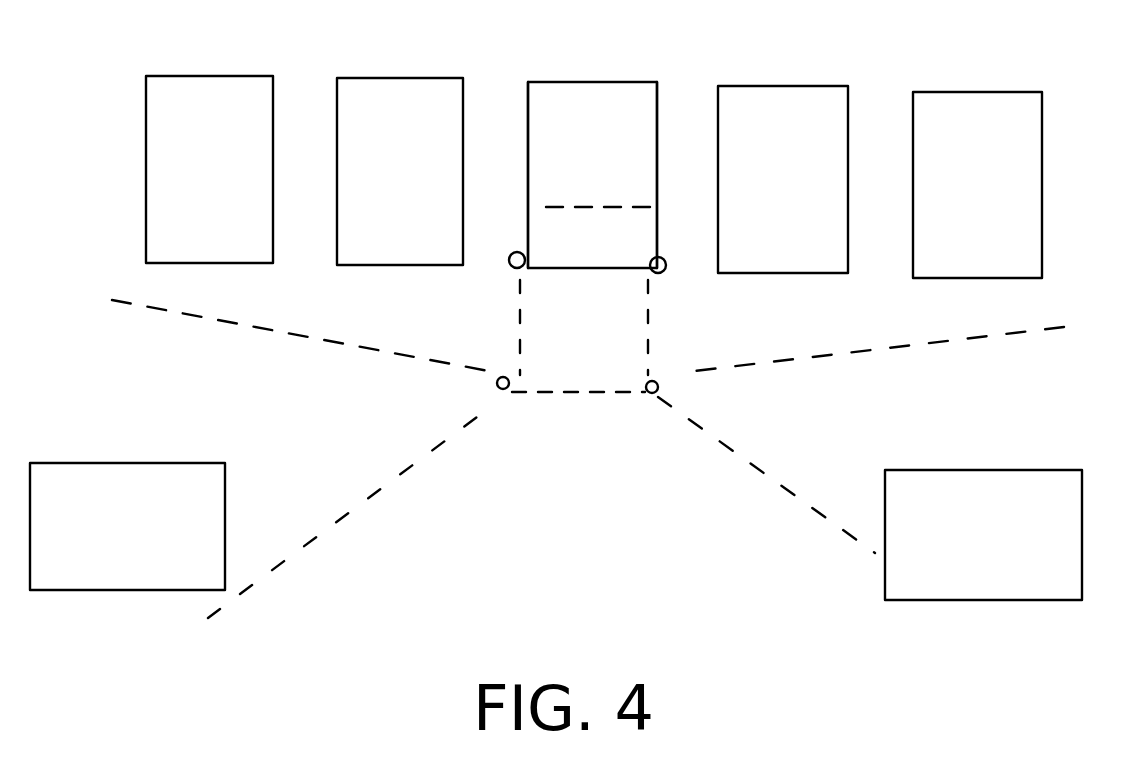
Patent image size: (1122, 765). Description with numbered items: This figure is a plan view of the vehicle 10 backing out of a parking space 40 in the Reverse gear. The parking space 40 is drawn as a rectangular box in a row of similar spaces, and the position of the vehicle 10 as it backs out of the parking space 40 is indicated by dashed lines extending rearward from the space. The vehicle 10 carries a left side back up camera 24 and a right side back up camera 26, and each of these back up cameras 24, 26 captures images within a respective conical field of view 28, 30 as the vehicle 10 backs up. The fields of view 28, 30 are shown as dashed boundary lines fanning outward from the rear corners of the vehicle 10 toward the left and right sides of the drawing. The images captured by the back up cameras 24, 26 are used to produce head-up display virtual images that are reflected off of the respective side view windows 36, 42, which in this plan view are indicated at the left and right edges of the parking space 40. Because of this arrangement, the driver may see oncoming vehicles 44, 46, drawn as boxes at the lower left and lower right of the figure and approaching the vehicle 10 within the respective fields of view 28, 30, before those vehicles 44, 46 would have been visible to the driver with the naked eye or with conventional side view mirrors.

The vehicle 10 is at (606, 255).
The left side back up camera 24 is at (510, 268).
The right side back up camera 26 is at (660, 378).
The field of view 28 is at (118, 357).
The field of view 30 is at (1060, 355).
The side view window 36 is at (528, 137).
The parking space 40 is at (603, 127).
The side view window 42 is at (657, 137).
The oncoming vehicle 44 is at (165, 546).
The oncoming vehicle 46 is at (1022, 557).